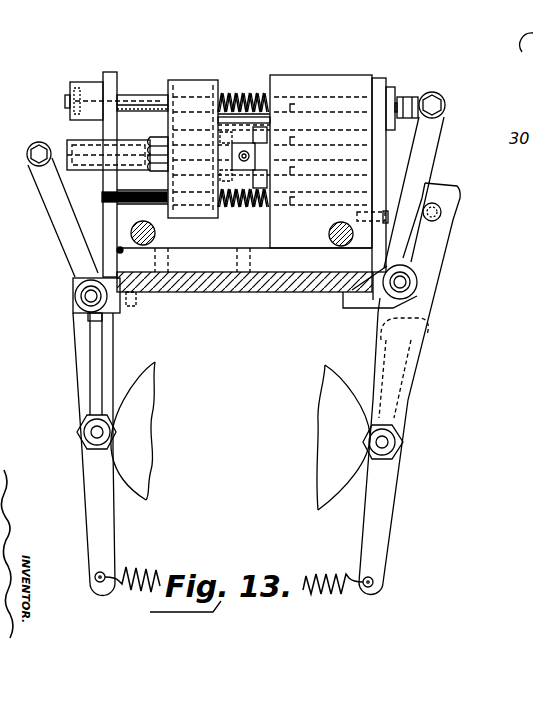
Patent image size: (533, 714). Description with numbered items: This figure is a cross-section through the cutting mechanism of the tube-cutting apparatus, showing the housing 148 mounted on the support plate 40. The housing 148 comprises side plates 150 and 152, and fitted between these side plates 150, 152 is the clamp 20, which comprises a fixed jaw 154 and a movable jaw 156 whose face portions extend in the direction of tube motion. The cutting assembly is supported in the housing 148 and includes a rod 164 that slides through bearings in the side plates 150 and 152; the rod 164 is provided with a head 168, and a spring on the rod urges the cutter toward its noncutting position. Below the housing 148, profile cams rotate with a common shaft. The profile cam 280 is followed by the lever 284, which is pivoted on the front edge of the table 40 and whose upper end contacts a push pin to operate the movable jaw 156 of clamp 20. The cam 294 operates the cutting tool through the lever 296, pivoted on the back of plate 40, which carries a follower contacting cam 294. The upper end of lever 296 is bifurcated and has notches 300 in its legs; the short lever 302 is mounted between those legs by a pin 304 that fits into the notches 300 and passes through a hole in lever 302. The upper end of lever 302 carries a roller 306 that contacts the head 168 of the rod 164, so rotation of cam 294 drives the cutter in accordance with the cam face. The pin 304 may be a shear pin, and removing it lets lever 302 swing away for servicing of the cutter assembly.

The clamp 20 is at (252, 163).
The support plate 40 is at (235, 293).
The housing 148 is at (421, 65).
The side plate 150 is at (110, 75).
The side plate 152 is at (387, 174).
The fixed jaw 154 is at (253, 150).
The movable jaw 156 is at (238, 149).
The rod 164 is at (144, 95).
The head 168 is at (411, 97).
The profile cam 280 is at (140, 380).
The lever 284 is at (77, 356).
The cam 294 is at (355, 388).
The lever 296 is at (417, 384).
The notches 300 is at (441, 210).
The short lever 302 is at (436, 167).
The pin 304 is at (442, 224).
The roller 306 is at (444, 104).